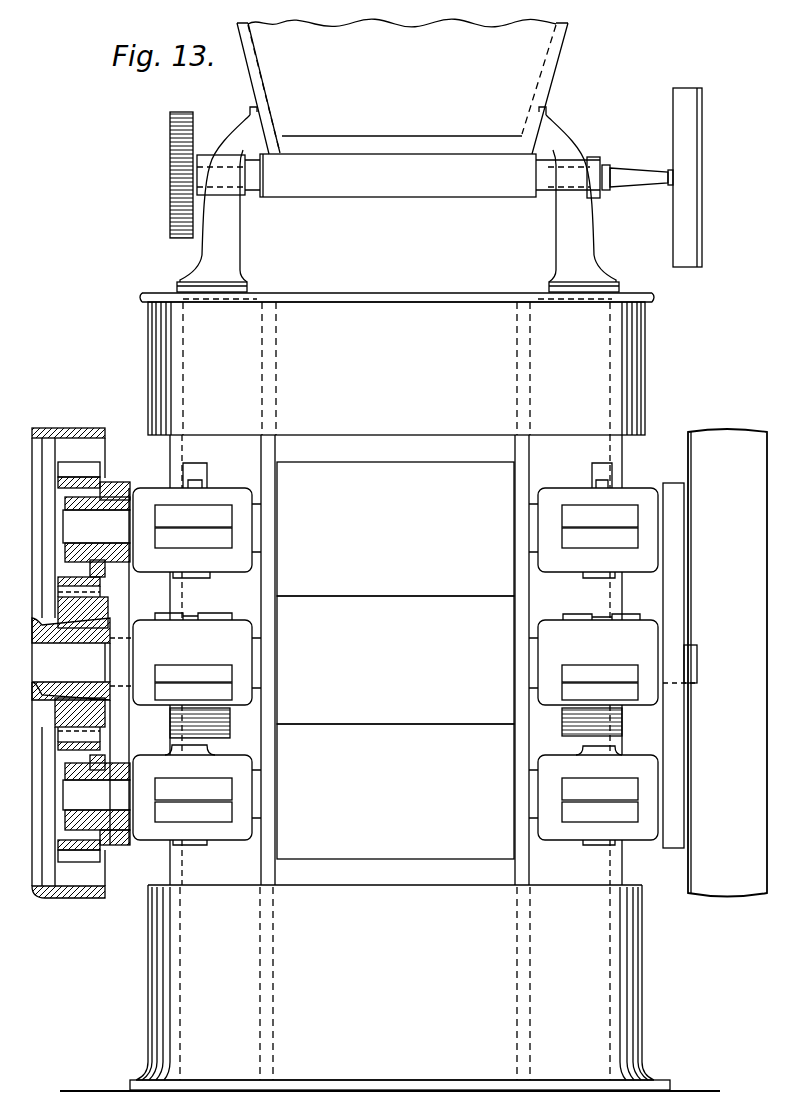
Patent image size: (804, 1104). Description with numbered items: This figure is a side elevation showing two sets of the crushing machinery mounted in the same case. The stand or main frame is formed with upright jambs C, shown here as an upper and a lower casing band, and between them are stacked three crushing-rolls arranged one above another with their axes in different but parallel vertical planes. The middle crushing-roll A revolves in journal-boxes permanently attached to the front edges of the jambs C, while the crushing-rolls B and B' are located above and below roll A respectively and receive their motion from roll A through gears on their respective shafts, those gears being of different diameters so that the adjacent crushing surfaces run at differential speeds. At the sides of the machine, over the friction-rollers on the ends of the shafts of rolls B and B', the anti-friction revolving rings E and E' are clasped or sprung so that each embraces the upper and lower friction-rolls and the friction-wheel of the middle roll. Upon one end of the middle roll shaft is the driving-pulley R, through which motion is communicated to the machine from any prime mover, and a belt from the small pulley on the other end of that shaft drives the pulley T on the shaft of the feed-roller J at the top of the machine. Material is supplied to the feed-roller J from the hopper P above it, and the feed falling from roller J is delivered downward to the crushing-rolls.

The hopper P is at (402, 86).
The feed-roller J is at (422, 175).
The pulley T is at (665, 177).
The upright jambs C is at (395, 686).
The crushing-roll B is at (395, 529).
The middle crushing-roll A is at (395, 660).
The crushing-roll B' is at (395, 791).
The anti-friction revolving ring E is at (188, 652).
The bearing box E' is at (617, 653).
The driving-pulley R is at (399, 652).